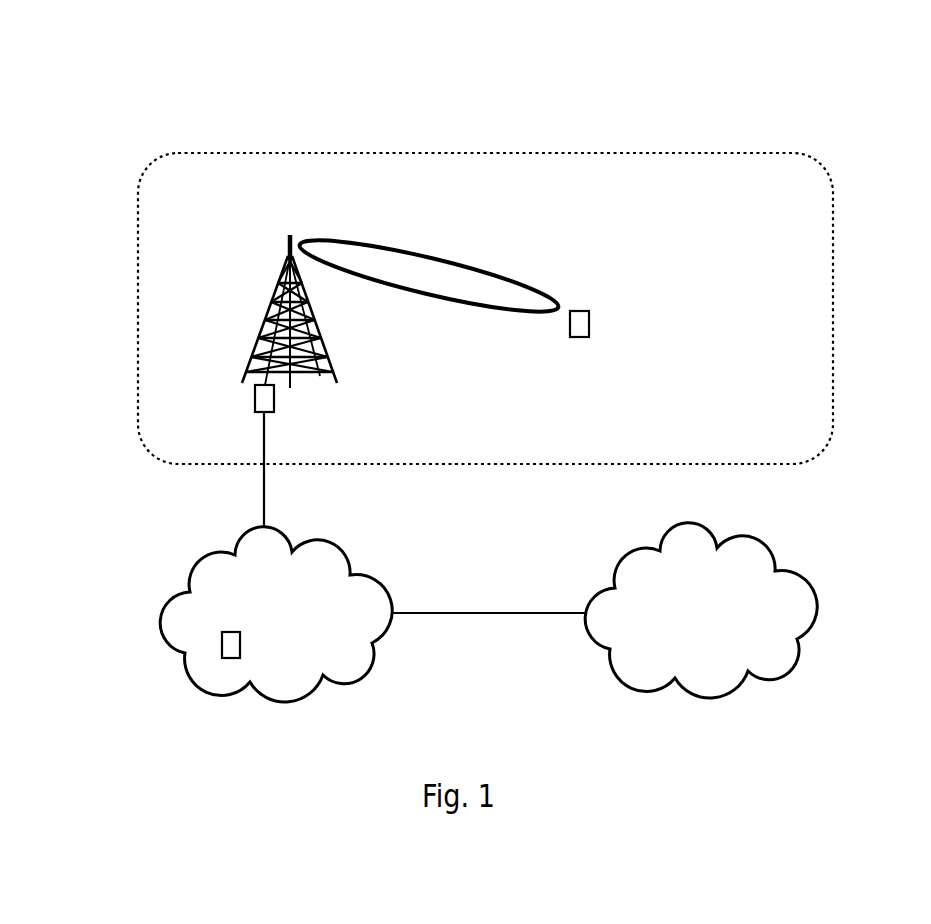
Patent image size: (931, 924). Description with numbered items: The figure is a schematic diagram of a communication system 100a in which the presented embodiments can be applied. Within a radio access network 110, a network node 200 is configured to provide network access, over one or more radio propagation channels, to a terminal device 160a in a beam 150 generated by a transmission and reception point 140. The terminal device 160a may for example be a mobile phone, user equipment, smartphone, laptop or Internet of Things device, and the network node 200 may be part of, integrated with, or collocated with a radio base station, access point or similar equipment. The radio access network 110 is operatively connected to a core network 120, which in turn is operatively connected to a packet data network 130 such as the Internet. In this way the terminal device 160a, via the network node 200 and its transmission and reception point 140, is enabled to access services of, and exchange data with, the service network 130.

The communication system 100a is at (236, 78).
The radio access network 110 is at (137, 295).
The core network 120 is at (293, 607).
The packet data network 130 is at (729, 632).
The transmission and reception point 140 is at (277, 255).
The beam 150 is at (456, 262).
The terminal device 160a is at (590, 327).
The network node 200 is at (275, 399).